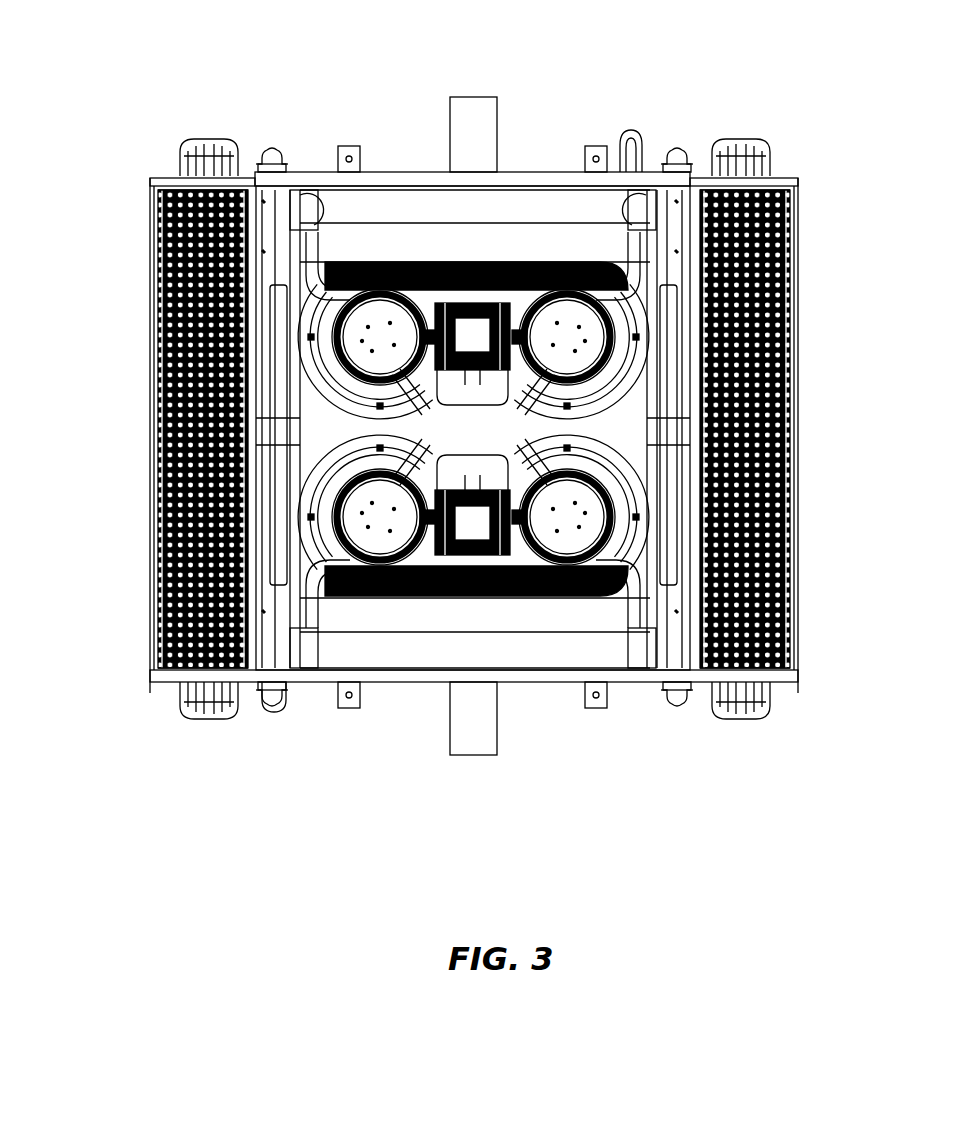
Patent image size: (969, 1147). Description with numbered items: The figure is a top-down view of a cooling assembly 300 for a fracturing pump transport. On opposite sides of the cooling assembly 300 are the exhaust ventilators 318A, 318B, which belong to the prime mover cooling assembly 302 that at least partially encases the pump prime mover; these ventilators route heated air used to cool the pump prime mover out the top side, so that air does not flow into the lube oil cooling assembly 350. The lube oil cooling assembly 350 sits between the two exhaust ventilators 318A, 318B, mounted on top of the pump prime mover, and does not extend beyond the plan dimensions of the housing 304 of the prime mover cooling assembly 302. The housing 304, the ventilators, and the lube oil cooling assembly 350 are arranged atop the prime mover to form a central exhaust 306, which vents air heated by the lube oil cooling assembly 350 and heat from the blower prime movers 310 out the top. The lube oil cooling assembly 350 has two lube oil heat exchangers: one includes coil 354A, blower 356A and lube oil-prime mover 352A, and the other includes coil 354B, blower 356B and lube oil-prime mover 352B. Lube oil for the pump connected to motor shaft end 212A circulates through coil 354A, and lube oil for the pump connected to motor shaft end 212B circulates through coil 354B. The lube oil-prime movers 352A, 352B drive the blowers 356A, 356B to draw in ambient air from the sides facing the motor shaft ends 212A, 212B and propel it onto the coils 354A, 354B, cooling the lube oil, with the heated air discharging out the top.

The cooling assembly 300 is at (158, 60).
The prime mover cooling assembly 302 is at (140, 551).
The housing 304 is at (800, 482).
The central exhaust 306 is at (268, 645).
The blower prime mover 310 is at (336, 357).
The exhaust ventilator 318A is at (146, 238).
The exhaust ventilator 318B is at (806, 238).
The lube oil cooling assembly 350 is at (319, 182).
The motor shaft end 212A is at (445, 129).
The motor shaft end 212B is at (445, 743).
The lube oil-prime mover 352A is at (452, 384).
The lube oil-prime mover 352B is at (489, 470).
The coil 354A is at (534, 203).
The blower 356A is at (572, 243).
The coil 354B is at (506, 652).
The blower 356B is at (572, 602).